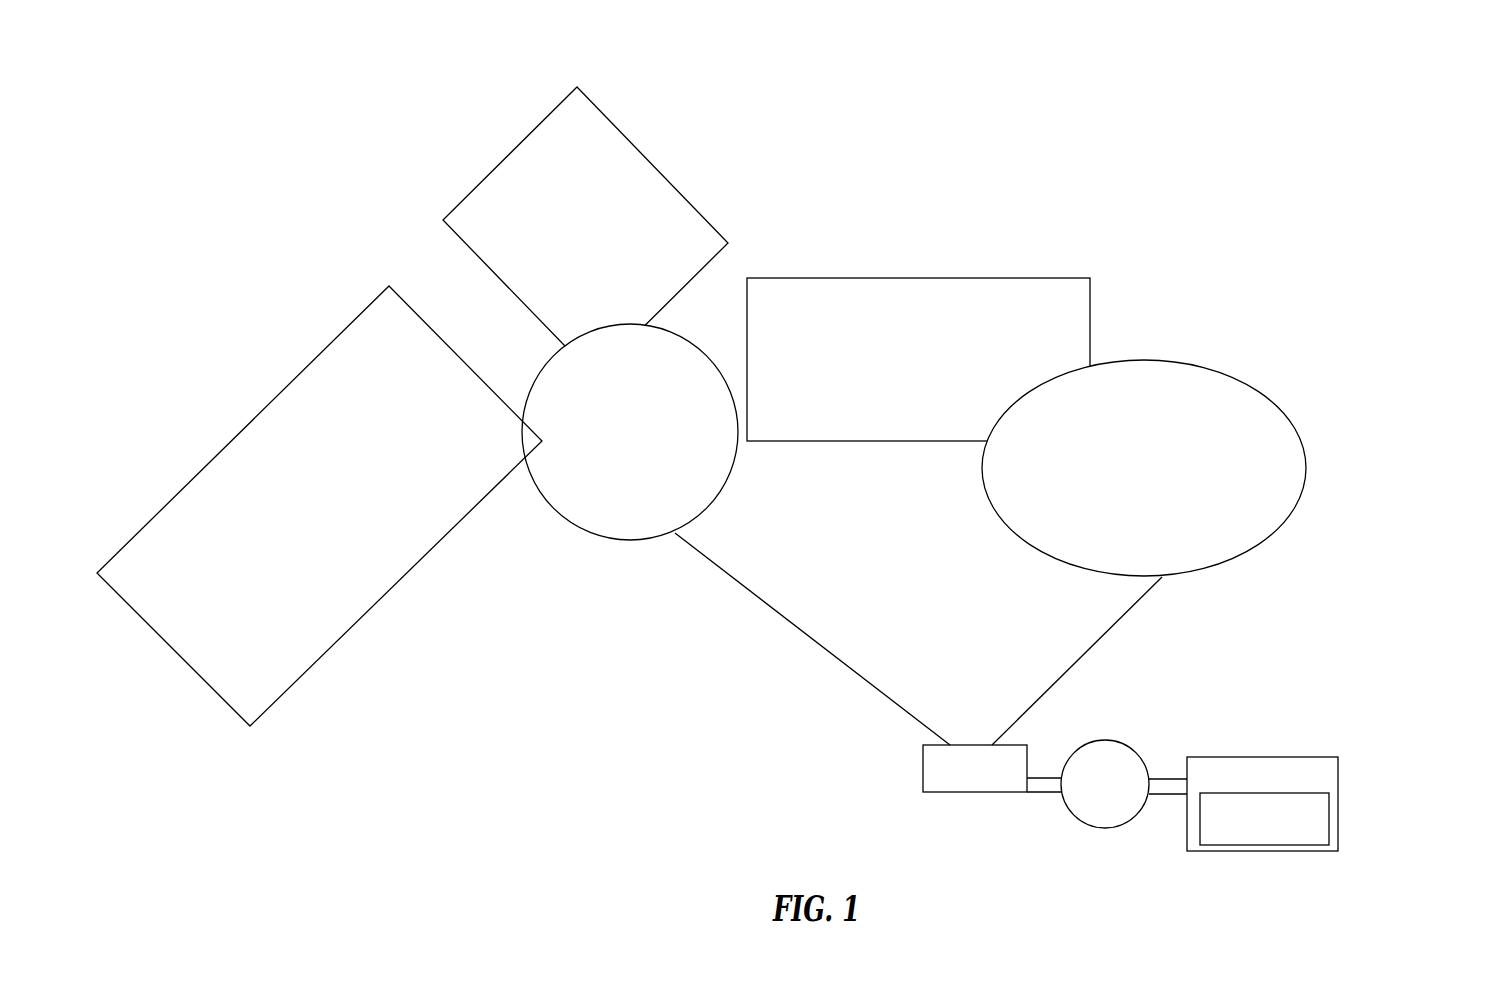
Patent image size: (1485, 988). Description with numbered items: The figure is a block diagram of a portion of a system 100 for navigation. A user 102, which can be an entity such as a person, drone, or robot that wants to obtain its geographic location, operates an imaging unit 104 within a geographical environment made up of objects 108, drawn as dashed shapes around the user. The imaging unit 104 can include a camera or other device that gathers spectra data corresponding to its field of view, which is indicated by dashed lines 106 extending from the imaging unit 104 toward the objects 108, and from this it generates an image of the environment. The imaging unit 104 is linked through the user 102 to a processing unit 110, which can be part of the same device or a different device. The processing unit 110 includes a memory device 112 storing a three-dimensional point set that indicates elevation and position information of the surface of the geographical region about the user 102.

The system for navigation 100 is at (1406, 84).
The user 102 is at (1126, 743).
The imaging unit 104 is at (923, 768).
The field of view 106 is at (783, 617).
The objects 108 is at (643, 152).
The processing unit 110 is at (1285, 760).
The memory device 112 is at (1329, 817).